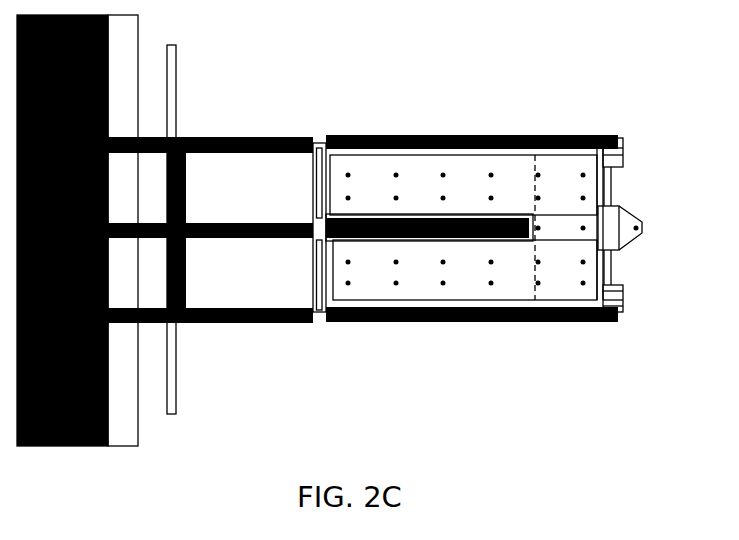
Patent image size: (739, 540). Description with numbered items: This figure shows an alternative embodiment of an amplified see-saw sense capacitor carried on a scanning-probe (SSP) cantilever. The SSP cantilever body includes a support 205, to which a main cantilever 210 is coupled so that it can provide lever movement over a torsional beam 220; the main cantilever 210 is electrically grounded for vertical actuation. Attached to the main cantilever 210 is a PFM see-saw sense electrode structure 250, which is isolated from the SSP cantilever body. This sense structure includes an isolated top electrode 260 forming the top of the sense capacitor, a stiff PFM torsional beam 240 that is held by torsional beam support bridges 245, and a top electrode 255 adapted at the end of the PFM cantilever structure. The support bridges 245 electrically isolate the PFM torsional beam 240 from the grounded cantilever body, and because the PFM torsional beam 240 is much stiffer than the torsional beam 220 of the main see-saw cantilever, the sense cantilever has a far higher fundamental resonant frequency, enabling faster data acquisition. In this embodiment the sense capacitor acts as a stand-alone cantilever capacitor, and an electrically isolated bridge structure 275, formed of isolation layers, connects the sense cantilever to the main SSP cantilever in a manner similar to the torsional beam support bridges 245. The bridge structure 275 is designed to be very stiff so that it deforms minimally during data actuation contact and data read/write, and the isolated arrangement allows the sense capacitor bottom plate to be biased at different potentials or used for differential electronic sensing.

The support 205 is at (86, 446).
The torsional beam 220 is at (177, 390).
The main cantilever 210 is at (620, 130).
The bridge structure 275 is at (315, 287).
The top electrode 260 is at (470, 282).
The top electrode 255 is at (630, 212).
The PFM see-saw sense electrode structure 250 is at (638, 228).
The PFM torsional beam 240 is at (613, 267).
The torsional beam support bridge 245 is at (623, 305).